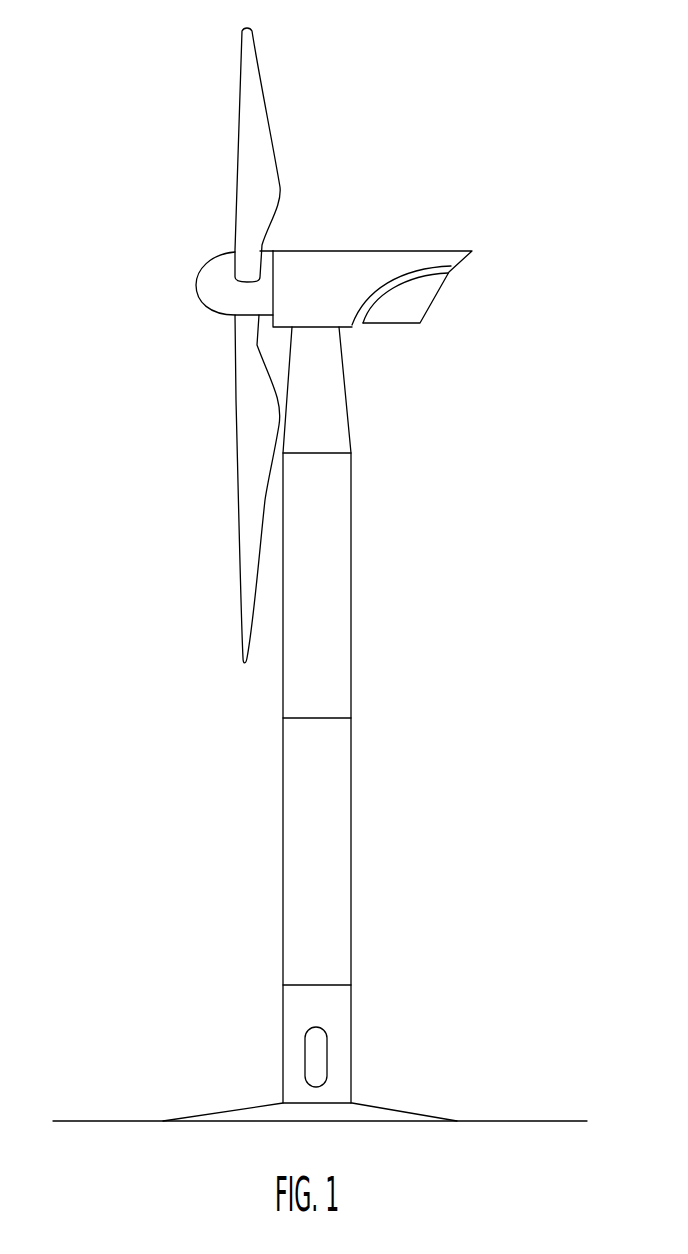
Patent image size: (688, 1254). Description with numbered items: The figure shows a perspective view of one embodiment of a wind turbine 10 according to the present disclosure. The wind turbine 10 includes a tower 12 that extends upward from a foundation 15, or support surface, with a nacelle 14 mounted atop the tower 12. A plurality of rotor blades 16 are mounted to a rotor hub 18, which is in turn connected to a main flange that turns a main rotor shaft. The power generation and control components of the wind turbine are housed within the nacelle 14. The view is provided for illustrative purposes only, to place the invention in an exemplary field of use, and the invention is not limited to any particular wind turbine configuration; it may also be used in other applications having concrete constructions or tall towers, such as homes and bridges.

The wind turbine 10 is at (156, 139).
The tower 12 is at (293, 818).
The nacelle 14 is at (358, 264).
The foundation 15 is at (90, 1121).
The rotor blades 16 is at (252, 127).
The rotor hub 18 is at (207, 286).